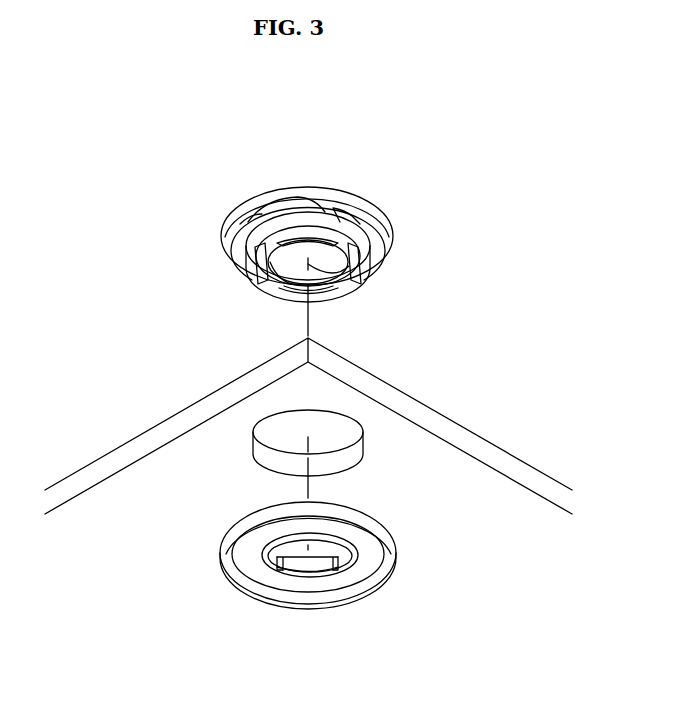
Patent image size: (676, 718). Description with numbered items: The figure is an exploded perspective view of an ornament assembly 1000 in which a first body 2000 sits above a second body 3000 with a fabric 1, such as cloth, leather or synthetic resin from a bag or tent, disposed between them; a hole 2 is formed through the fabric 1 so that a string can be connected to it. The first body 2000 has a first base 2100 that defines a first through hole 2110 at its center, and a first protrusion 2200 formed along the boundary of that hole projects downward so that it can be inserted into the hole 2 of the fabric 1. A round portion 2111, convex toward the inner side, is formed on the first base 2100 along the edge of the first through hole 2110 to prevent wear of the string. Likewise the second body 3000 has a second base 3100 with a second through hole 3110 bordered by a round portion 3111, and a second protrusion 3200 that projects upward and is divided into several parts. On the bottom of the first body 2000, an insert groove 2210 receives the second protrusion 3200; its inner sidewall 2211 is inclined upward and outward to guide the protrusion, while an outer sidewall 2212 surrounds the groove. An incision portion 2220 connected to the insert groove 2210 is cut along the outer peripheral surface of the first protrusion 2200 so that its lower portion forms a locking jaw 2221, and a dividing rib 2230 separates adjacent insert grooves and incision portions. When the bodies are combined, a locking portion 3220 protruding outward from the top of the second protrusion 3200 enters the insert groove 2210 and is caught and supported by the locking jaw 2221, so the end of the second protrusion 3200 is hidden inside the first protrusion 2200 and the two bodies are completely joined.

The ornament assembly 1000 is at (103, 110).
The fabric 1 is at (156, 425).
The hole 2 is at (336, 442).
The first body 2000 is at (307, 177).
The first base 2100 is at (385, 207).
The first through hole 2110 is at (344, 283).
The round portion 2111 is at (296, 284).
The first protrusion 2200 is at (245, 248).
The insert groove 2210 is at (258, 278).
The inner sidewall 2211 is at (362, 258).
The outer sidewall 2212 is at (357, 280).
The incision portion 2220 is at (333, 208).
The locking jaw 2221 is at (255, 200).
The dividing rib 2230 is at (243, 222).
The second body 3000 is at (396, 590).
The second base 3100 is at (392, 540).
The second through hole 3110 is at (303, 553).
The round portion 3111 is at (341, 576).
The second protrusion 3200 is at (296, 571).
The locking portion 3220 is at (266, 560).